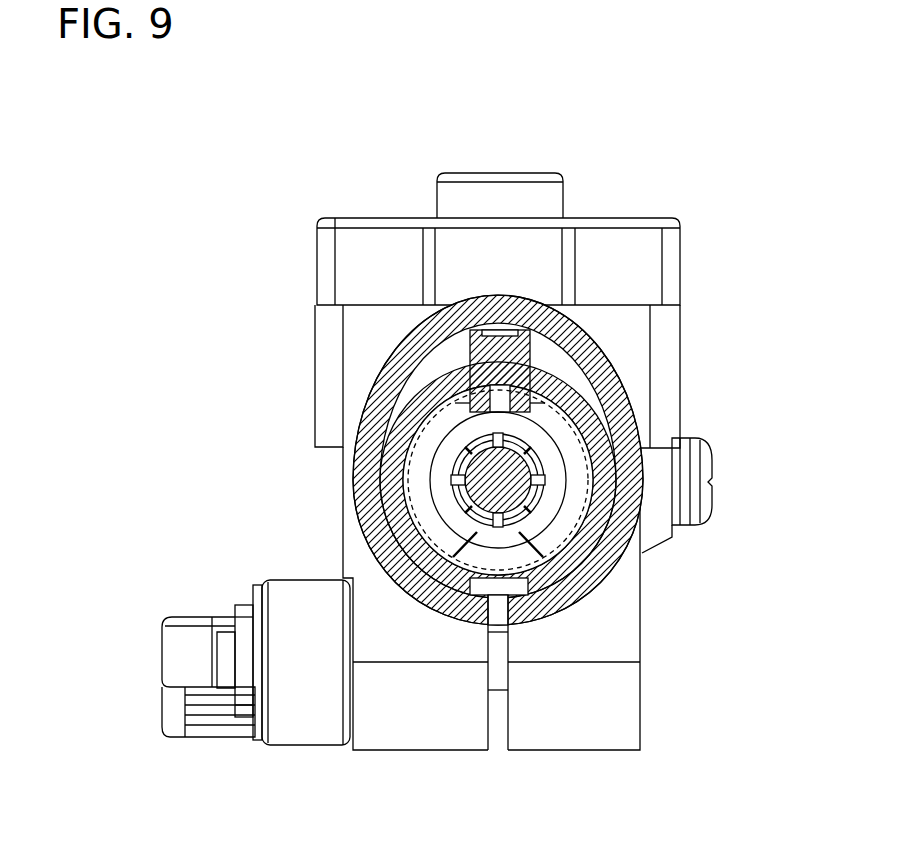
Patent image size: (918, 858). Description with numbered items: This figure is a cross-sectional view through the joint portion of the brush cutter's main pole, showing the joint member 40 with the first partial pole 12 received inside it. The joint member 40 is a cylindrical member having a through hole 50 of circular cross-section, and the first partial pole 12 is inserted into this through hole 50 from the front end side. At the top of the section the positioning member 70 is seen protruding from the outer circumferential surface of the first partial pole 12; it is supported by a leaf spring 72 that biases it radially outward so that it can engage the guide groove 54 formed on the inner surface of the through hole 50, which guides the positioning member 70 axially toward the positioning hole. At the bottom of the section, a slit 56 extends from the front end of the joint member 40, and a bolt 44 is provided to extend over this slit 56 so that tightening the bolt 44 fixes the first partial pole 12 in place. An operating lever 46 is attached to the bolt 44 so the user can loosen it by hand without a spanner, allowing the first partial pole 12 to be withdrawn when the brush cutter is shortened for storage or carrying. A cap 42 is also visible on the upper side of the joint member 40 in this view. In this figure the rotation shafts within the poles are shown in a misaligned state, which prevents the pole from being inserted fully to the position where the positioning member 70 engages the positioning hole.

The first partial pole 12 is at (615, 418).
The joint member 40 is at (585, 338).
The cap 42 is at (514, 173).
The bolt 44 is at (498, 692).
The operating lever 46 is at (183, 617).
The through hole 50 is at (380, 400).
The guide groove 54 is at (480, 330).
The slit 56 is at (506, 614).
The positioning member 70 is at (510, 328).
The leaf spring 72 is at (445, 362).